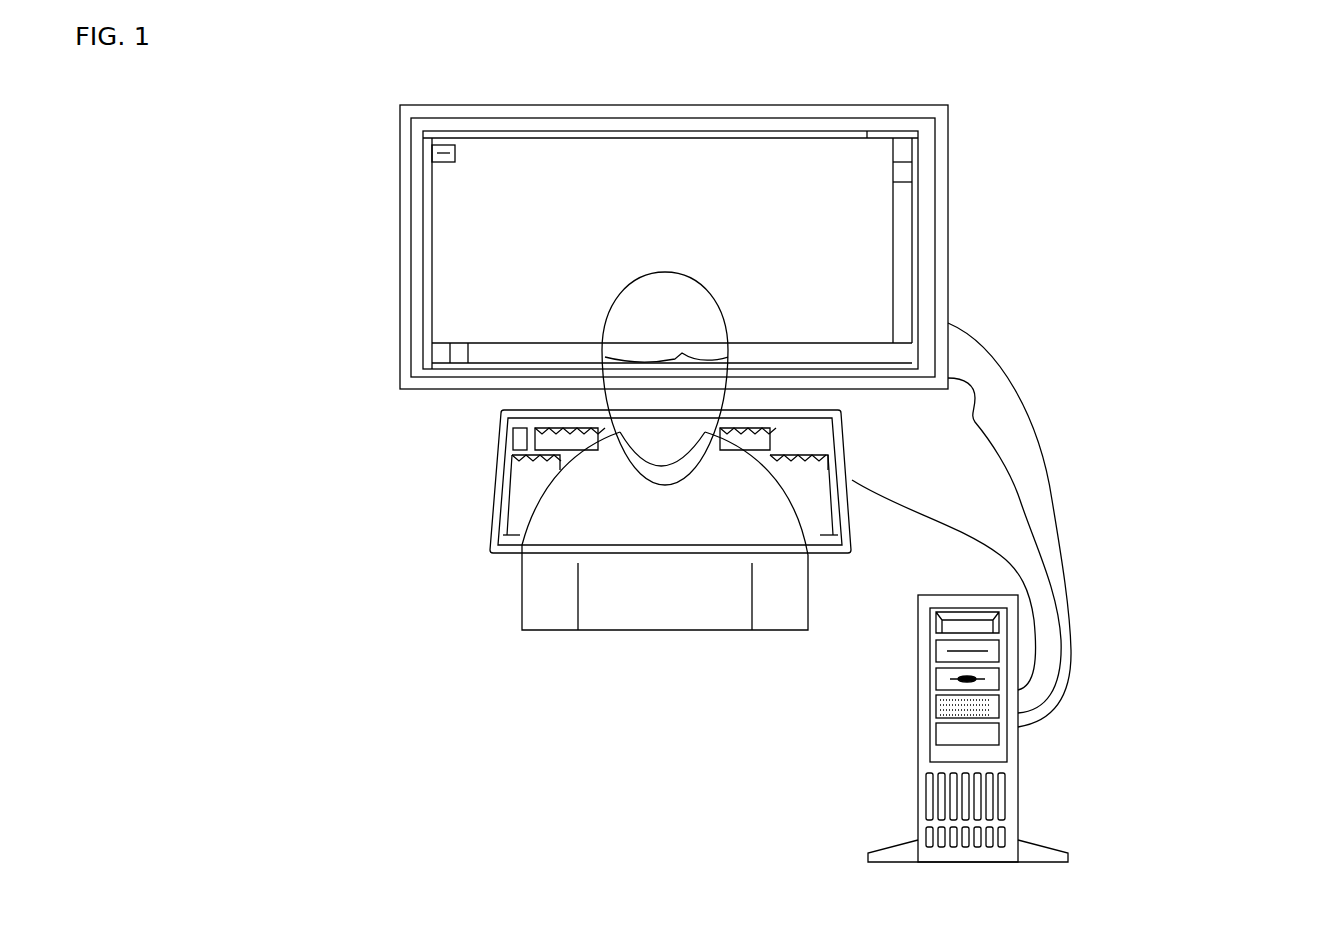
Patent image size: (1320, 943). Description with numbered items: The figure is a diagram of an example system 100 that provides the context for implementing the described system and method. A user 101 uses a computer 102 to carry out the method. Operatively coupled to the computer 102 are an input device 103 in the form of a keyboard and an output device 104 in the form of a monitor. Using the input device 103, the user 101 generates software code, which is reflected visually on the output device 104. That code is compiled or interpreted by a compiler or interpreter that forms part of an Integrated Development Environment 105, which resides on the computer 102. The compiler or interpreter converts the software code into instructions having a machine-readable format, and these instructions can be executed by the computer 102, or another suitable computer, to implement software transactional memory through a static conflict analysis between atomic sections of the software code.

The system 100 is at (1283, 77).
The user 101 is at (520, 598).
The computer 102 is at (918, 718).
The input device 103 is at (500, 440).
The output device 104 is at (400, 228).
The Integrated Development Environment 105 is at (478, 129).